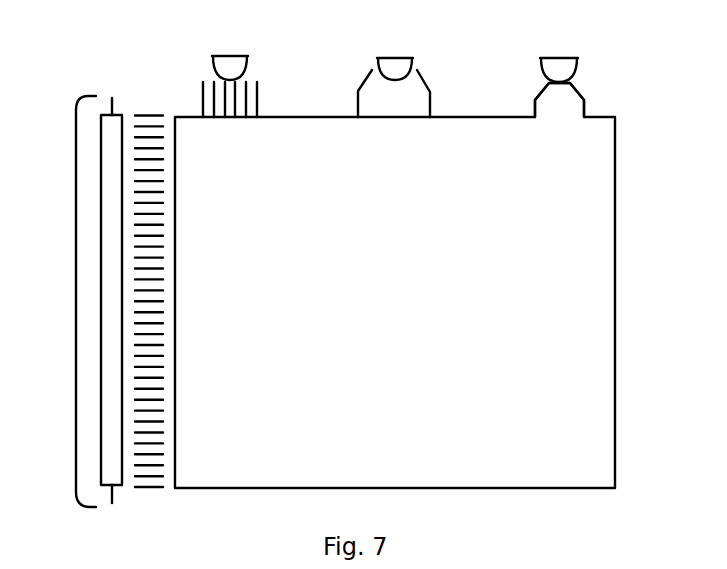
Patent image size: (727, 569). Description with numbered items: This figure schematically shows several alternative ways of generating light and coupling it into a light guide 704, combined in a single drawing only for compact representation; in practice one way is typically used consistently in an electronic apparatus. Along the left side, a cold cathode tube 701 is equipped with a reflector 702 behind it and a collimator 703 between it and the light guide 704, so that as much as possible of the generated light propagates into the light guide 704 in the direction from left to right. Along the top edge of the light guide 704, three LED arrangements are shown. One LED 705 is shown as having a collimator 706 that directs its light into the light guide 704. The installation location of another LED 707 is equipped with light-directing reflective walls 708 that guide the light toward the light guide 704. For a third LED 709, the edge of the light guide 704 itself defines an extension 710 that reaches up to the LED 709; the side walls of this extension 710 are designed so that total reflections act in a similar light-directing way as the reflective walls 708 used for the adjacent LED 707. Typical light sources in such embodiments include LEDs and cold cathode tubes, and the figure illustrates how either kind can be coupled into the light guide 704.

The cold cathode tube 701 is at (112, 108).
The reflector 702 is at (76, 96).
The collimator 703 is at (152, 484).
The light guide 704 is at (597, 272).
The LED 705 is at (235, 62).
The collimator 706 is at (252, 93).
The LED 707 is at (397, 62).
The light-directing reflective walls 708 is at (430, 95).
The LED 709 is at (560, 62).
The extension 710 is at (575, 98).